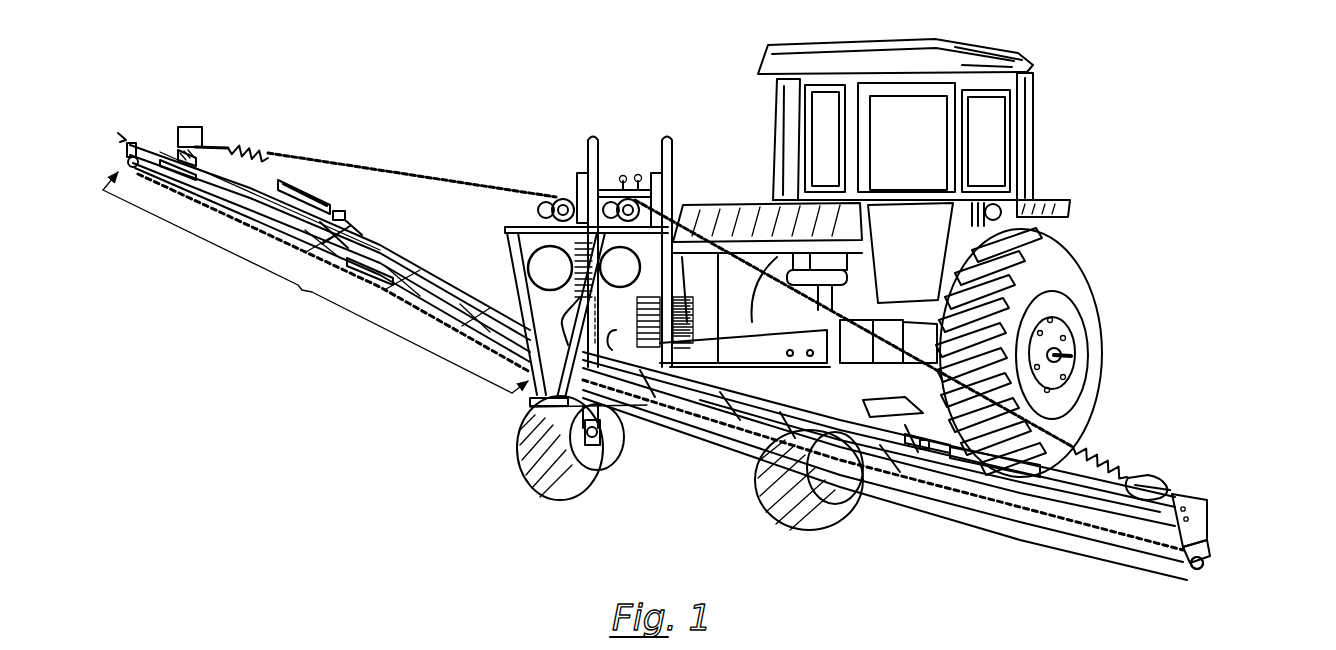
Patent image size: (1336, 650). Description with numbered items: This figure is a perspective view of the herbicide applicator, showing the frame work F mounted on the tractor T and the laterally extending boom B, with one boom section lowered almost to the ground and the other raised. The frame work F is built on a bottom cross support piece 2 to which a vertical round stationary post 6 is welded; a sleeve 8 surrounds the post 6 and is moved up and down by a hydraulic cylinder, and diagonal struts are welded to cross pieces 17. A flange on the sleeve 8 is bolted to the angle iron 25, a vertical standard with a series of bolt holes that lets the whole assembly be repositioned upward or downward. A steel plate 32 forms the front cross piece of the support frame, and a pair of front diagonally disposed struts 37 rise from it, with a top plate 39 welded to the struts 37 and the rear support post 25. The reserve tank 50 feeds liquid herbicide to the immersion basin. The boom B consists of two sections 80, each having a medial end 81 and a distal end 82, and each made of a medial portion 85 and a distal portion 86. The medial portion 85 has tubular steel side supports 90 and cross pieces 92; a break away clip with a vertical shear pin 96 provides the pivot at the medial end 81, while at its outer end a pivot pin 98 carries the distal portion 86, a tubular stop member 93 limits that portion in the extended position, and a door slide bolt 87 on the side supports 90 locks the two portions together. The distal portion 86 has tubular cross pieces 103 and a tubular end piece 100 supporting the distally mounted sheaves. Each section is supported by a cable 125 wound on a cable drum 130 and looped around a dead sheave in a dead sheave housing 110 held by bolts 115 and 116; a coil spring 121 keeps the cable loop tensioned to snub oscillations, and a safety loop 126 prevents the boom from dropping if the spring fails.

The distal end 82 is at (128, 143).
The vertical shear pin 96 is at (243, 208).
The pivot pin 98 is at (303, 233).
The tubular stop member 93 is at (338, 214).
The locking member 87 is at (362, 237).
The tubular steel cross piece 92 is at (395, 272).
The boom section 80 is at (308, 291).
The tubular cross piece 103 is at (328, 236).
The top plate 39 is at (520, 227).
The reserve tank 50 is at (550, 268).
The front diagonally disposed strut 37 is at (620, 267).
The cable drum 130 is at (549, 200).
The sleeve 8 is at (580, 176).
The vertical round stationary post 6 is at (589, 146).
The cross piece 17 is at (611, 186).
The angle iron 25 is at (696, 308).
The bottom cross support piece 2 is at (642, 326).
The tubular steel side support 90 is at (744, 382).
The medial end 81 is at (513, 377).
The steel plate 32 is at (622, 440).
The medial portion 85 is at (760, 452).
The distal portion 86 is at (885, 467).
The cable 125 is at (1074, 448).
The coil spring 121 is at (1122, 466).
The safety loop 126 is at (1160, 484).
The bolt 115 is at (1197, 502).
The bolt 116 is at (1198, 514).
The dead sheave housing 110 is at (1200, 526).
The tubular end piece 100 is at (1202, 554).
The tractor T is at (1074, 90).
The frame work F is at (592, 104).
The boom B is at (385, 410).